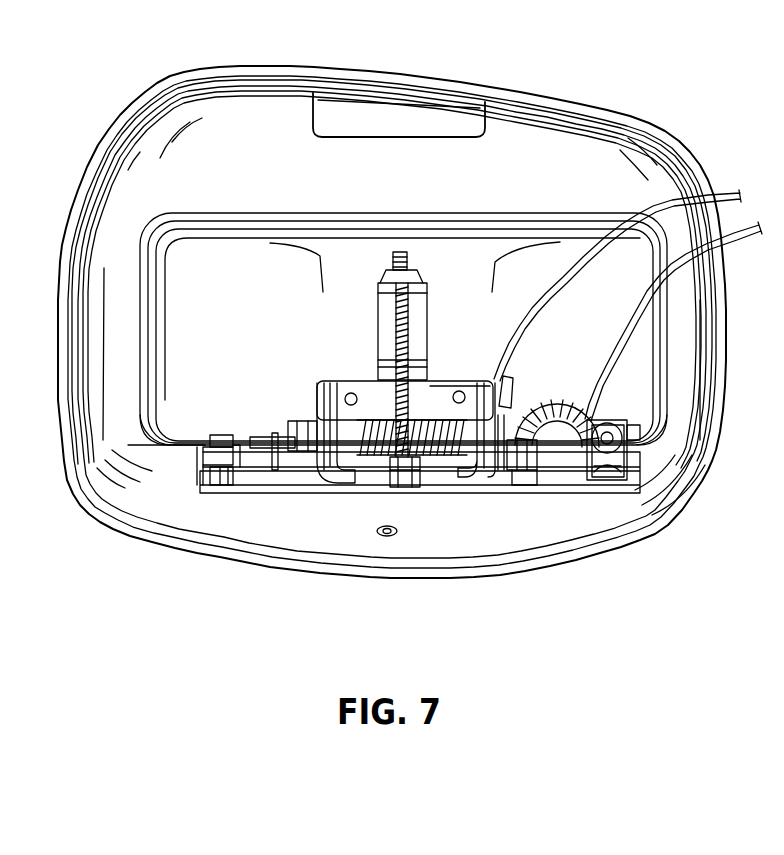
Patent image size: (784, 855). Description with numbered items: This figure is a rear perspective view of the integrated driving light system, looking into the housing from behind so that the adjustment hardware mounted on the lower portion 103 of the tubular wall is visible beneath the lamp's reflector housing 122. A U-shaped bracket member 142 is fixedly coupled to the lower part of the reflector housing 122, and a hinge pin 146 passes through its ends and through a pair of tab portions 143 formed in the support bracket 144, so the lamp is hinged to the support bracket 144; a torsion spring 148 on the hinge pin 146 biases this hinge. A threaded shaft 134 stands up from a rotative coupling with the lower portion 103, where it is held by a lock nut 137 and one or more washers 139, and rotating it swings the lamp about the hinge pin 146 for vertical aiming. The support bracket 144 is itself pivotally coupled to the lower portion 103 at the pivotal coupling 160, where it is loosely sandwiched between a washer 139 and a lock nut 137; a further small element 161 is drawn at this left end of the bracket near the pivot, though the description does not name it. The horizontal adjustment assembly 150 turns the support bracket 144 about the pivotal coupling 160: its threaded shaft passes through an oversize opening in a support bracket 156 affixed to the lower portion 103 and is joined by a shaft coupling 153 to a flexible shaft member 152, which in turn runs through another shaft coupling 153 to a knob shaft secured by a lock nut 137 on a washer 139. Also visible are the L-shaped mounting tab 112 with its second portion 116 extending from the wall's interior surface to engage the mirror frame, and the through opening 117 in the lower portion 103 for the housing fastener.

The lower portion of tubular wall 103 is at (250, 522).
The mounting tab 112 is at (393, 123).
The second portion of tab 116 is at (478, 110).
The through opening 117 is at (378, 532).
The reflector housing 122 is at (240, 278).
The threaded shaft 134 is at (427, 320).
The lock nut 137 is at (234, 433).
The washer 139 is at (185, 487).
The bracket member 142 is at (317, 388).
The tab portions 143 is at (320, 381).
The support bracket 144 is at (272, 436).
The hinge pin 146 is at (437, 420).
The torsion spring 148 is at (385, 412).
The horizontal adjustment assembly 150 is at (601, 405).
The flexible shaft member 152 is at (570, 395).
The shaft coupling 153 is at (513, 410).
The support bracket 156 is at (636, 473).
The pivotal coupling 160 is at (155, 445).
The nut 161 is at (214, 435).